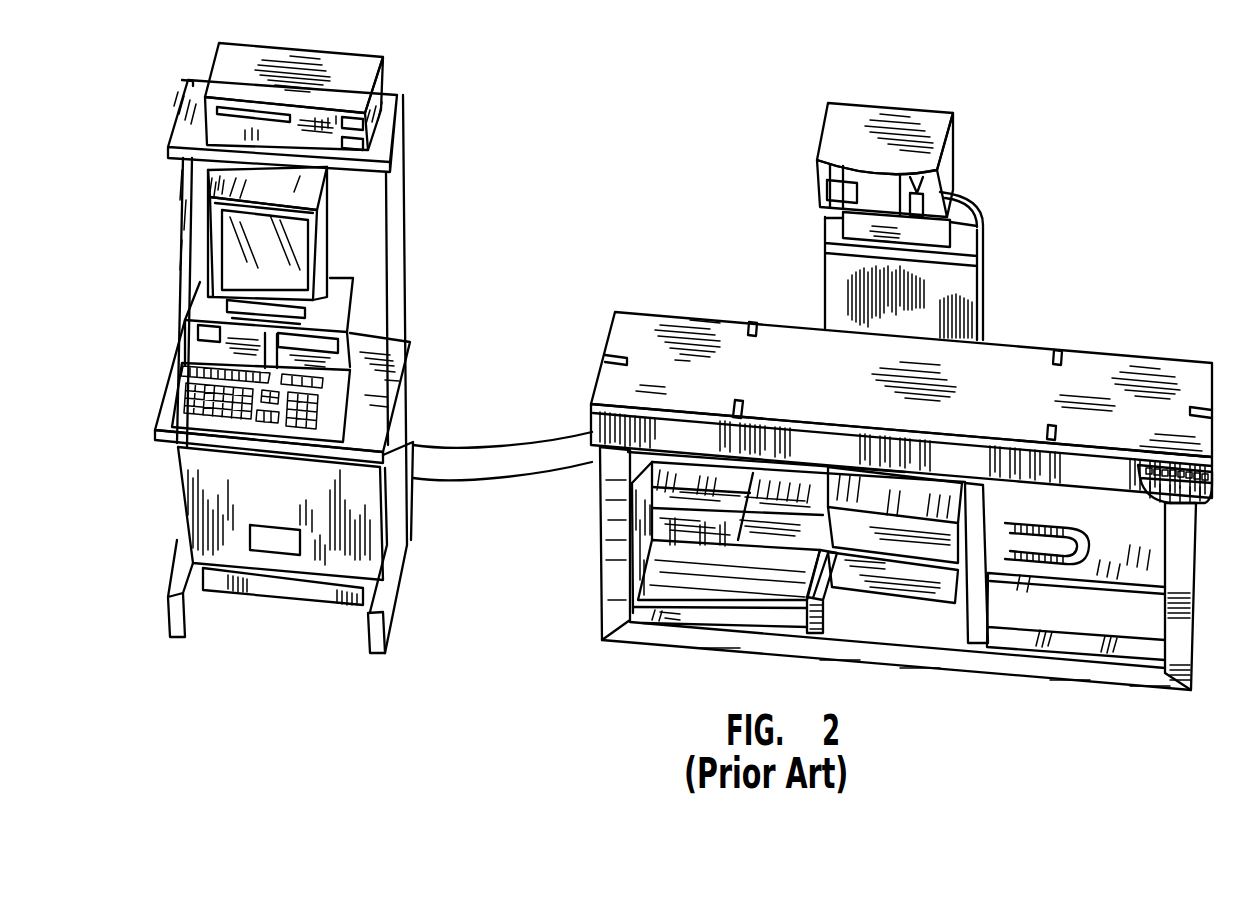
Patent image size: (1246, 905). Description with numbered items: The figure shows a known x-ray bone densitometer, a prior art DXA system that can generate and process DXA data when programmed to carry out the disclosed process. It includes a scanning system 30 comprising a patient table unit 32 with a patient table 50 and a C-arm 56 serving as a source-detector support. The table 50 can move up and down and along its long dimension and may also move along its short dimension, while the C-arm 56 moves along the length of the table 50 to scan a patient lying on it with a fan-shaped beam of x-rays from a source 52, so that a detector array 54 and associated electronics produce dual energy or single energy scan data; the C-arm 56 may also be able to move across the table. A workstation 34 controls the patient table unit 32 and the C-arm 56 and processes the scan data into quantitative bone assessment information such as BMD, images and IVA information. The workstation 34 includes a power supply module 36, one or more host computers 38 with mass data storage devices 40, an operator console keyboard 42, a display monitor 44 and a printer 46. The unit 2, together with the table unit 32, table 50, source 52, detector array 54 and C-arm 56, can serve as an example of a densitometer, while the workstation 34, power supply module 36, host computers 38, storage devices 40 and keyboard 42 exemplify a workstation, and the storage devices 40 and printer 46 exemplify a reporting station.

The unit 2 is at (875, 403).
The scanning system 30 is at (622, 660).
The patient table unit 32 is at (580, 574).
The workstation 34 is at (228, 628).
The power supply module 36 is at (303, 567).
The host computer 38 is at (350, 331).
The mass data storage device 40 is at (353, 371).
The operator console keyboard 42 is at (318, 399).
The display monitor 44 is at (310, 249).
The printer 46 is at (403, 104).
The patient table 50 is at (1023, 366).
The x-ray source 52 is at (857, 527).
The detector array 54 is at (828, 150).
The C-arm 56 is at (983, 247).